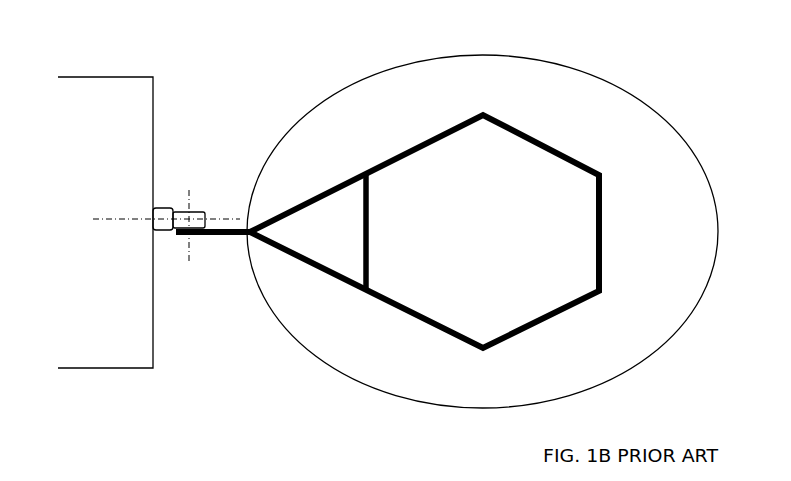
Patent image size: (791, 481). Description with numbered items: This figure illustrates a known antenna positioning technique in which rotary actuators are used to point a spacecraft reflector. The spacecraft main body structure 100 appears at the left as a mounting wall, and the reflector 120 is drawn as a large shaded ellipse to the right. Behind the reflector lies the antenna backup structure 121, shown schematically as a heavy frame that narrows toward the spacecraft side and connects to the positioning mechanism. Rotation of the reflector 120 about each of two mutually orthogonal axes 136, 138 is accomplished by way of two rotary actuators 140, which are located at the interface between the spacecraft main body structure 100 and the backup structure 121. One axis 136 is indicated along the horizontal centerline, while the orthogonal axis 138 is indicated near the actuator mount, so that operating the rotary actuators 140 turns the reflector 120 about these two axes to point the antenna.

The spacecraft main body structure 100 is at (95, 110).
The reflector 120 is at (482, 231).
The antenna backup structure 121 is at (424, 231).
The axis 136 is at (135, 218).
The axis 138 is at (188, 263).
The rotary actuators 140 is at (170, 207).